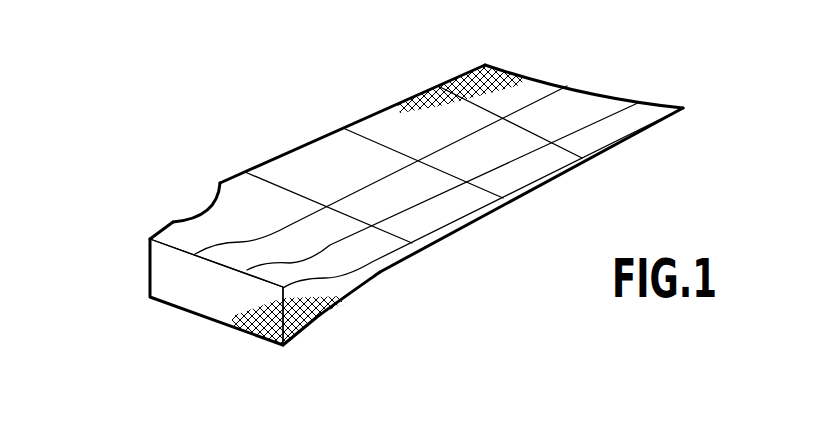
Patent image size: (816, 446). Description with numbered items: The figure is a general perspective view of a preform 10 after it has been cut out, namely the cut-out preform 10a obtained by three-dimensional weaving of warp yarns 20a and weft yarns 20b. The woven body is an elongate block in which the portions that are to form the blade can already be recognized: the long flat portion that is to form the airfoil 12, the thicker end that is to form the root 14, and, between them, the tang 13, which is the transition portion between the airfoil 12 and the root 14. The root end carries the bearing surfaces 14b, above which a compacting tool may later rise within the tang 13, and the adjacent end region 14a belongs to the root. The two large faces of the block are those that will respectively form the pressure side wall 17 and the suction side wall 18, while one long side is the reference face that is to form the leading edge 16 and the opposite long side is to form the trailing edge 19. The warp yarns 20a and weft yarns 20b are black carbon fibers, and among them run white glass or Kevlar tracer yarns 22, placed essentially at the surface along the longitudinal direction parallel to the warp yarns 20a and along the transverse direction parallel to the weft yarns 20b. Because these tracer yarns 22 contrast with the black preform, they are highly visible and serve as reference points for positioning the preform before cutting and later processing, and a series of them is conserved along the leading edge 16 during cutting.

The preform 10 is at (340, 90).
The cut-out preform 10a is at (216, 283).
The airfoil 12 is at (282, 150).
The tang 13 is at (170, 220).
The root 14 is at (155, 303).
The front end face region 14a is at (207, 320).
The bearing surfaces 14b is at (347, 295).
The leading edge 16 is at (513, 204).
The pressure side wall 17 is at (606, 156).
The suction side wall 18 is at (643, 113).
The trailing edge 19 is at (318, 141).
The warp yarns 20a is at (485, 65).
The weft yarns 20b is at (462, 89).
The tracer yarns 22 is at (531, 134).